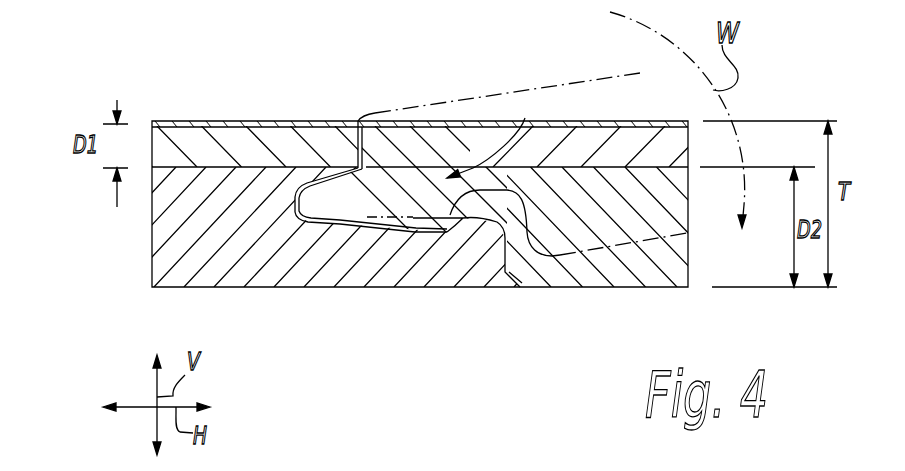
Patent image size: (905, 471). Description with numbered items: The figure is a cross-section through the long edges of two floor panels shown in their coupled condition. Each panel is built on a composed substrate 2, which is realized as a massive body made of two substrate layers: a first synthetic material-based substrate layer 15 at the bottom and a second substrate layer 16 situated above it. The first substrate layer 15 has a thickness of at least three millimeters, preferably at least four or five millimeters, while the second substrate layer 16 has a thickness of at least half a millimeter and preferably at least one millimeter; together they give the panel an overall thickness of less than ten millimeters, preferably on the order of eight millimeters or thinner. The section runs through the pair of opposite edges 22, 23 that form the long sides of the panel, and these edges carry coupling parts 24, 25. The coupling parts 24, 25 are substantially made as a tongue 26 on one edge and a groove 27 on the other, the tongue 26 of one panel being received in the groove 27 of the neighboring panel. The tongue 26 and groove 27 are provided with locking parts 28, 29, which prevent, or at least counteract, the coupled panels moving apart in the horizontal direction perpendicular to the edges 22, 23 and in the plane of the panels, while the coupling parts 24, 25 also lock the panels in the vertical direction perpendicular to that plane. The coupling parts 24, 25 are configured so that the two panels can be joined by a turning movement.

The composed substrate 2 is at (132, 229).
The first synthetic material-based substrate layer 15 is at (227, 253).
The second substrate layer 16 is at (203, 148).
The opposite edge 22 is at (405, 93).
The opposite edge 23 is at (322, 112).
The coupling part 24 is at (525, 118).
The coupling part 25 is at (258, 191).
The tongue 26 is at (325, 197).
The groove 27 is at (303, 223).
The locking part 28 is at (427, 232).
The locking part 29 is at (448, 228).